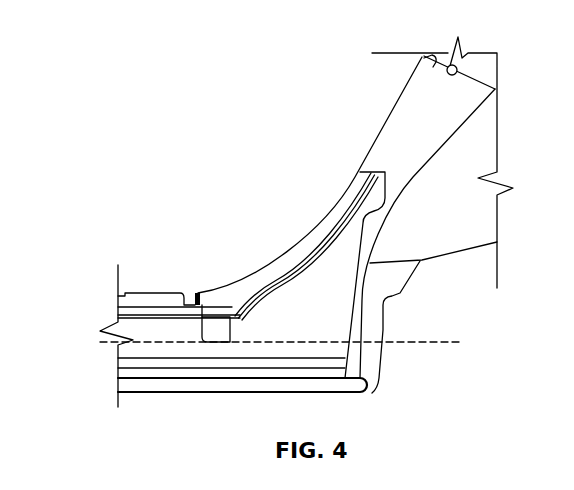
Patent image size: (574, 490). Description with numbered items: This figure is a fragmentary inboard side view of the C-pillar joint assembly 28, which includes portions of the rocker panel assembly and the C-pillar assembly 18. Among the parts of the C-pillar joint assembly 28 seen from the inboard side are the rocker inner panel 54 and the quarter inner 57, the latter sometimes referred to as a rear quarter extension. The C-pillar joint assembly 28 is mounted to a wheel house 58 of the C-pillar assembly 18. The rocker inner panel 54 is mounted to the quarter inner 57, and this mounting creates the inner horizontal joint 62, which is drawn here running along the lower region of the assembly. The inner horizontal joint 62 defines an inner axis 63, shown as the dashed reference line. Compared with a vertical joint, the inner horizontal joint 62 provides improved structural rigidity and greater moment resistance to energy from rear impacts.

The C-pillar assembly 18 is at (466, 62).
The C-pillar joint assembly 28 is at (222, 147).
The rocker inner panel 54 is at (147, 394).
The quarter inner 57 is at (353, 178).
The wheel house 58 is at (411, 268).
The inner horizontal joint 62 is at (230, 341).
The inner axis 63 is at (78, 343).